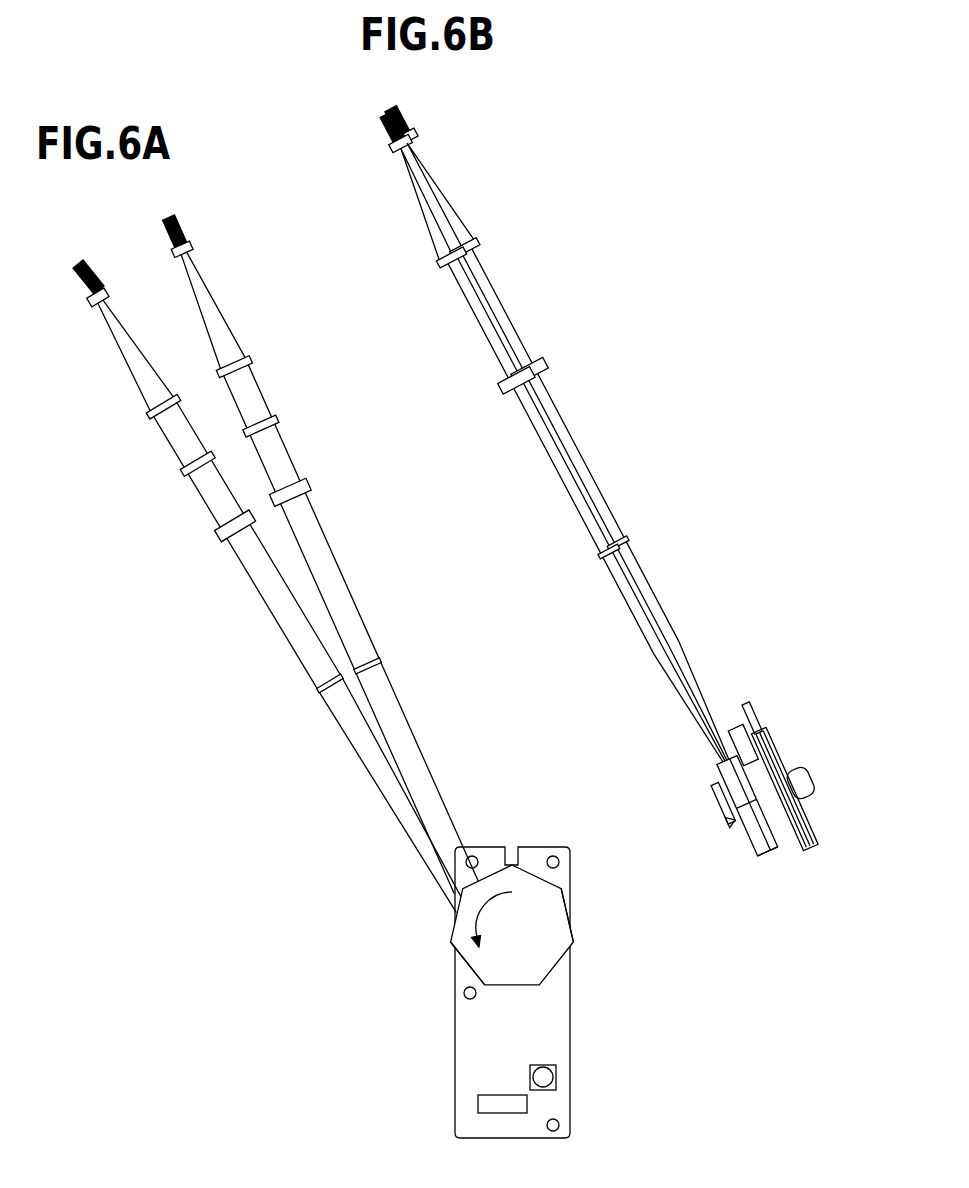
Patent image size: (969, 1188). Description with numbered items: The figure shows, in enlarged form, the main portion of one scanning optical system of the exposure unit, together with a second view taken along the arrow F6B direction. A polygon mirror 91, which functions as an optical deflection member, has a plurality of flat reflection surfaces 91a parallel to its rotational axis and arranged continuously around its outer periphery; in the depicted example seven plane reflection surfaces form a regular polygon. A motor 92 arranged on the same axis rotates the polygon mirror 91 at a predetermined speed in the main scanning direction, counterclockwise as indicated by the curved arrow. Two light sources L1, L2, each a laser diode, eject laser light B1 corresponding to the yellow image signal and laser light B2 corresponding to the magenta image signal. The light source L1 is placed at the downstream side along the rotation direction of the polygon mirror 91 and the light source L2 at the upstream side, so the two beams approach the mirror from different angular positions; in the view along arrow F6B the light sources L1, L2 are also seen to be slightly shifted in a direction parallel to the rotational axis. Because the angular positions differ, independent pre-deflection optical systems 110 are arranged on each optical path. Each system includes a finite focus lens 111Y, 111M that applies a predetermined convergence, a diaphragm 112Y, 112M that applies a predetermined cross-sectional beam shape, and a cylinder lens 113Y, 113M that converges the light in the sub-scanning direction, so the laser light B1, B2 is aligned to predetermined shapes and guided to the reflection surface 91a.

In FIG. 6A, the first light source L1 is at (90, 304).
In FIG. 6B, the first light source L1 is at (418, 133).
In FIG. 6A, the second light source L2 is at (193, 246).
In FIG. 6B, the second light source L2 is at (391, 149).
In FIG. 6A, the pre-deflection optical system 110 is at (160, 566).
In FIG. 6A, the finite focus lens 111Y is at (148, 415).
In FIG. 6B, the finite focus lens 111Y is at (480, 242).
In FIG. 6A, the diaphragm 112Y is at (182, 472).
In FIG. 6A, the cylinder lens 113Y is at (218, 536).
In FIG. 6B, the cylinder lens 113Y is at (548, 364).
In FIG. 6A, the finite focus lens 111M is at (250, 360).
In FIG. 6B, the finite focus lens 111M is at (440, 266).
In FIG. 6A, the diaphragm 112M is at (278, 420).
In FIG. 6A, the cylinder lens 113M is at (308, 484).
In FIG. 6B, the cylinder lens 113M is at (502, 390).
In FIG. 6A, the laser light B1 is at (273, 613).
In FIG. 6A, the laser light B2 is at (337, 565).
In FIG. 6A, the polygon mirror 91 is at (562, 957).
In FIG. 6B, the polygon mirror 91 is at (716, 766).
In FIG. 6A, the reflection surface 91a is at (566, 893).
In FIG. 6B, the reflection surface 91a is at (762, 862).
In FIG. 6A, the motor 92 is at (512, 992).
In FIG. 6B, the motor 92 is at (787, 836).
In FIG. 6A, the arrow F6B direction F6B is at (563, 722).